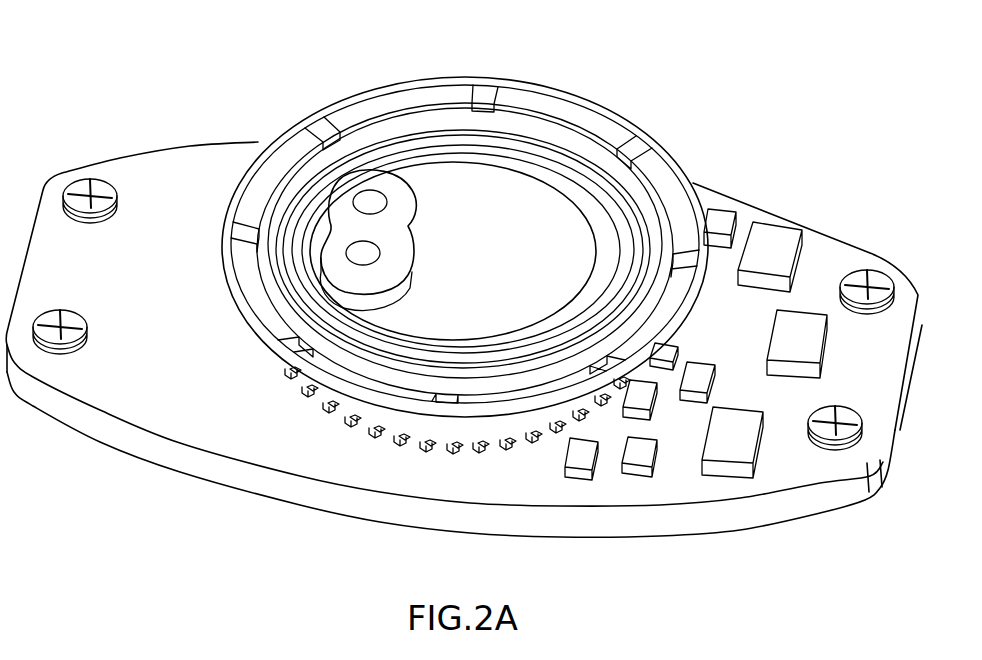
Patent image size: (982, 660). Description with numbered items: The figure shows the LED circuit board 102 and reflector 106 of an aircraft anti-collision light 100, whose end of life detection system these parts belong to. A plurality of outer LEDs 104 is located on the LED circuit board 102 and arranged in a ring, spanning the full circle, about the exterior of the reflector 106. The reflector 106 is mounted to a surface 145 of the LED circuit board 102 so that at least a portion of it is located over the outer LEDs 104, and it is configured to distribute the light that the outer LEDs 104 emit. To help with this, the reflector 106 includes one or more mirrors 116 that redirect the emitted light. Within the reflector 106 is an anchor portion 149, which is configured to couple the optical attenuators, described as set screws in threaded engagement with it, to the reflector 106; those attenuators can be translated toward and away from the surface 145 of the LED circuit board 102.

The aircraft anti-collision light 100 is at (110, 81).
The LED circuit board 102 is at (133, 170).
The outer LEDs 104 is at (354, 418).
The reflector 106 is at (373, 92).
The mirror 116 is at (553, 107).
The surface 145 is at (169, 351).
The anchor portion 149 is at (405, 203).